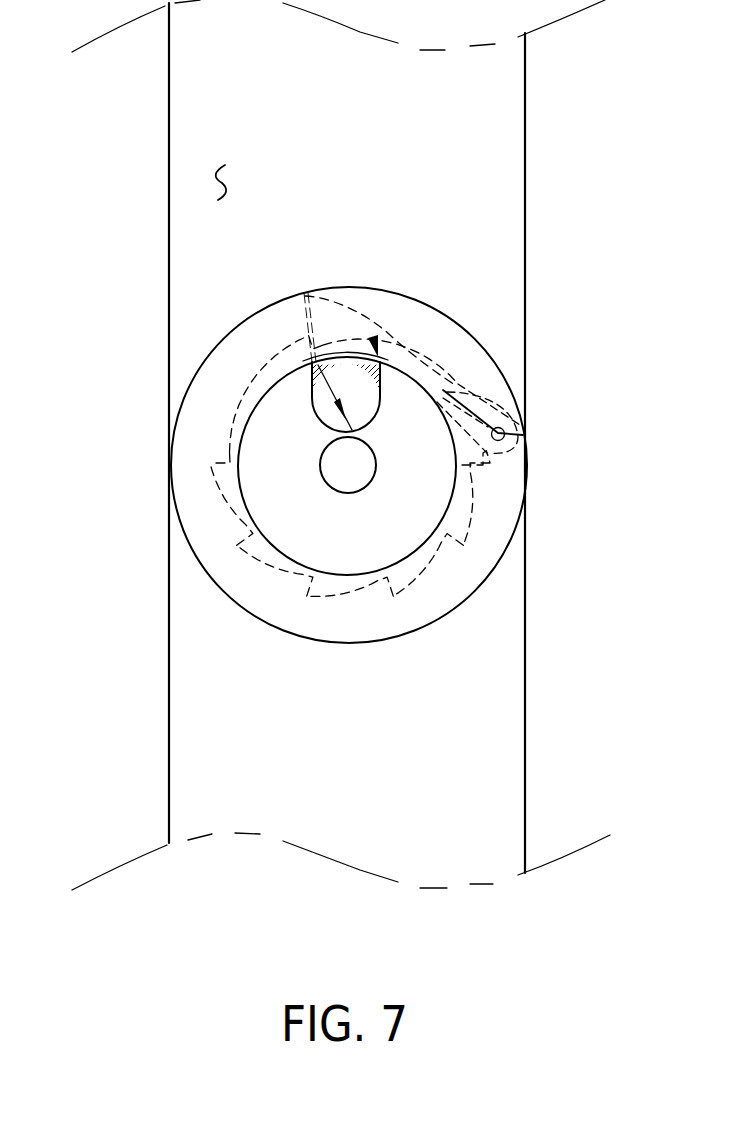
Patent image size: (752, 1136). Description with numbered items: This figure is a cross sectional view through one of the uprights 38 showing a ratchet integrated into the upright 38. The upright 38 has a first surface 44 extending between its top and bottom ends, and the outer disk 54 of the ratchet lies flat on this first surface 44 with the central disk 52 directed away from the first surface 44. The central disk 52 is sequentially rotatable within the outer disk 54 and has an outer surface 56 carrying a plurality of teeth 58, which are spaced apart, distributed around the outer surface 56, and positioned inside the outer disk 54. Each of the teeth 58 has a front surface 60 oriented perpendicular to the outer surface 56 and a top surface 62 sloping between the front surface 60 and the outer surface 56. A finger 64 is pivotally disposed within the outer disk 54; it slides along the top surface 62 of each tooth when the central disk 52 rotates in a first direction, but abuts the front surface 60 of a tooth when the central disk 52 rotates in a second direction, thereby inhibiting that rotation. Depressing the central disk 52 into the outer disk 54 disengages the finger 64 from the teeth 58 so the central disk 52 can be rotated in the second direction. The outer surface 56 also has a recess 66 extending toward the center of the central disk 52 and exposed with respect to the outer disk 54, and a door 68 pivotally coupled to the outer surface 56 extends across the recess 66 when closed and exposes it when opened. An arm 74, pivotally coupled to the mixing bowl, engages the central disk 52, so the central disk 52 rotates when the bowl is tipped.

The upright 38 is at (168, 110).
The first surface 44 is at (218, 185).
The central disk 52 is at (293, 560).
The outer disk 54 is at (193, 560).
The outer surface 56 is at (462, 500).
The teeth 58 is at (447, 392).
The front surface 60 is at (505, 435).
The top surface 62 is at (470, 513).
The finger 64 is at (498, 404).
The recess 66 is at (311, 367).
The door 68 is at (376, 354).
The arm 74 is at (311, 372).